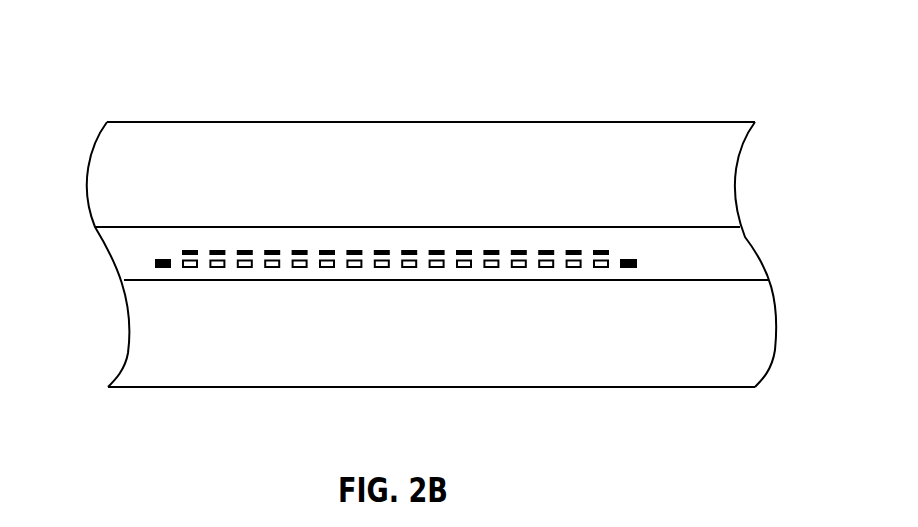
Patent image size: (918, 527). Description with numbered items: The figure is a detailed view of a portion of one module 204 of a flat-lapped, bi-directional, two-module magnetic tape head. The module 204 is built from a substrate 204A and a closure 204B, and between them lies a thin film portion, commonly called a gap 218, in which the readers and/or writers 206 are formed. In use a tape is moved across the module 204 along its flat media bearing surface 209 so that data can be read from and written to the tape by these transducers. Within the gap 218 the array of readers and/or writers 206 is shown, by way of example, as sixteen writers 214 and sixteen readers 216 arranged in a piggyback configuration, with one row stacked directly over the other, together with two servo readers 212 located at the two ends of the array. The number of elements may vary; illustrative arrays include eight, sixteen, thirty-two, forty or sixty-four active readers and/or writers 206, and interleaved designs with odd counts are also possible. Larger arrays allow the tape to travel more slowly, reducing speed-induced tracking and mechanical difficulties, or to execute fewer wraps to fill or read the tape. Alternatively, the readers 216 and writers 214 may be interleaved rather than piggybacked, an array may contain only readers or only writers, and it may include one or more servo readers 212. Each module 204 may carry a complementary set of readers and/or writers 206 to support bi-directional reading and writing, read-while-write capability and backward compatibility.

The module 204 is at (121, 86).
The substrate 204A is at (217, 122).
The closure 204B is at (272, 387).
The media bearing surface 209 is at (354, 190).
The gap 218 is at (757, 253).
The readers and/or writers 206 is at (393, 253).
The writers 214 is at (518, 250).
The readers 216 is at (520, 268).
The servo readers 212 is at (155, 263).